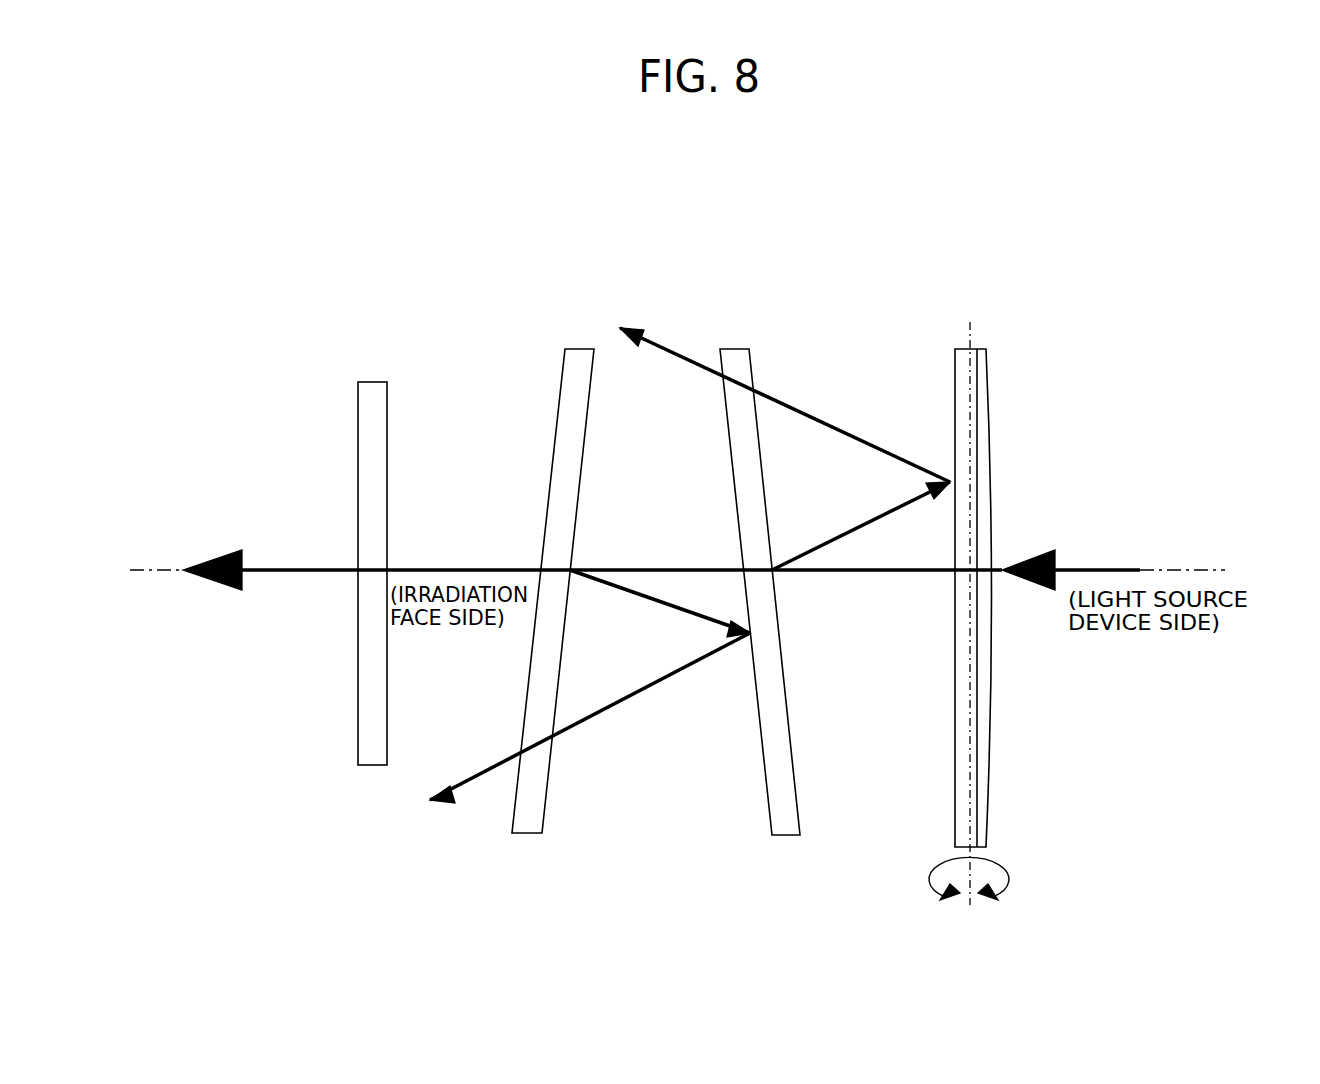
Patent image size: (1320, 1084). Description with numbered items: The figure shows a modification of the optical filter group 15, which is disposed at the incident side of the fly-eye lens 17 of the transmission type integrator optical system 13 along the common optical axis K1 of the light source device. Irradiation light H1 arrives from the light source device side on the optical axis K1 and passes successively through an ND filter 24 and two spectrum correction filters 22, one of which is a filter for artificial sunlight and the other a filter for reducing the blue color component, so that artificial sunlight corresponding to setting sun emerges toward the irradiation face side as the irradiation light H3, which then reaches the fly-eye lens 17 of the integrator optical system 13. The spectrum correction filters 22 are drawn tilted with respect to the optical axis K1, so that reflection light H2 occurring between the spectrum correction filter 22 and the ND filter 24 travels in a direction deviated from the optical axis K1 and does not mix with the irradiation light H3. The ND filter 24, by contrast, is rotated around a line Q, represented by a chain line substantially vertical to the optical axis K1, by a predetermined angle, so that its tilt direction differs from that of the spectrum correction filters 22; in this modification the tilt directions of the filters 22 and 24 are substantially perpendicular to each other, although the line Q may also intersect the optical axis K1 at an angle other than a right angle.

The transmission type integrator optical system 13 is at (377, 346).
The optical filter group 15 is at (882, 172).
The fly-eye lens 17 is at (358, 432).
The spectrum correction filter 22 is at (768, 314).
The ND filter 24 is at (983, 349).
The irradiation light H1 is at (1108, 566).
The reflection light H2 is at (845, 430).
The irradiation light H3 is at (292, 566).
The optical axis K1 is at (695, 570).
The line Q is at (969, 897).